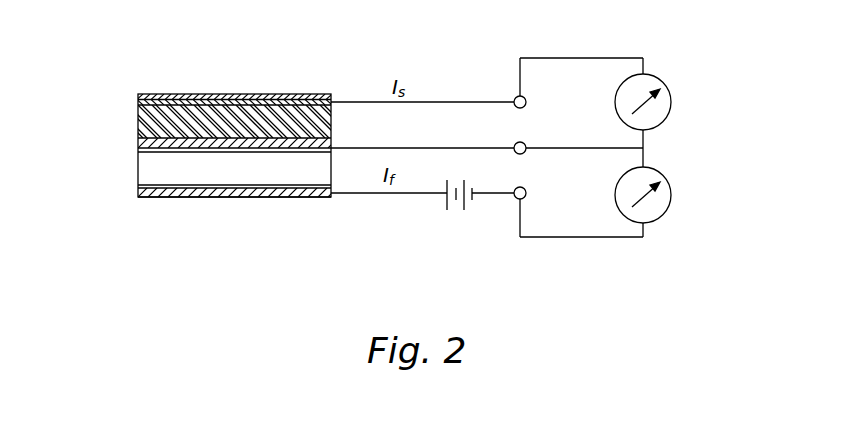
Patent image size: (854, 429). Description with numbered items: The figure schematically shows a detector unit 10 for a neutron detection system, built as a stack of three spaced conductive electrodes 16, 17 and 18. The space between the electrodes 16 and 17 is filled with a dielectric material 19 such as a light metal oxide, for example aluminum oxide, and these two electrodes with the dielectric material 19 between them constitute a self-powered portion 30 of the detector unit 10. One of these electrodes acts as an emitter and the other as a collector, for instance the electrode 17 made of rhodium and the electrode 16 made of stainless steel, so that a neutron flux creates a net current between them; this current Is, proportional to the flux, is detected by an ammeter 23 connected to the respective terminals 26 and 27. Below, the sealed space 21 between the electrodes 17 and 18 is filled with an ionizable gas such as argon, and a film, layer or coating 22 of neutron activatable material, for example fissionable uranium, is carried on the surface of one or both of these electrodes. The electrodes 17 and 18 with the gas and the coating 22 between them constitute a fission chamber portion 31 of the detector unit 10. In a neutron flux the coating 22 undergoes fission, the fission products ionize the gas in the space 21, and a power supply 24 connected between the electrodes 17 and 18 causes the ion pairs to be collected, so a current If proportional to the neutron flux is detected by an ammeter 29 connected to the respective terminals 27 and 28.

The detector unit 10 is at (166, 68).
The conductive electrode 16 is at (138, 98).
The conductive electrode 17 is at (138, 143).
The conductive electrode 18 is at (162, 183).
The dielectric material 19 is at (138, 121).
The space 21 is at (270, 178).
The coating of neutron activatable material 22 is at (137, 151).
The ammeter 23 is at (666, 83).
The power supply 24 is at (455, 213).
The terminal 26 is at (515, 96).
The terminal 27 is at (526, 143).
The terminal 28 is at (527, 197).
The ammeter 29 is at (671, 195).
The self-powered portion 30 is at (222, 82).
The fission chamber portion 31 is at (217, 208).